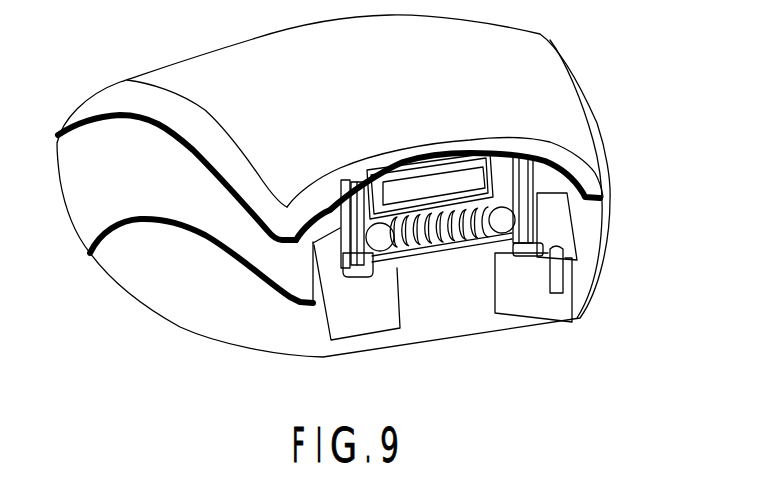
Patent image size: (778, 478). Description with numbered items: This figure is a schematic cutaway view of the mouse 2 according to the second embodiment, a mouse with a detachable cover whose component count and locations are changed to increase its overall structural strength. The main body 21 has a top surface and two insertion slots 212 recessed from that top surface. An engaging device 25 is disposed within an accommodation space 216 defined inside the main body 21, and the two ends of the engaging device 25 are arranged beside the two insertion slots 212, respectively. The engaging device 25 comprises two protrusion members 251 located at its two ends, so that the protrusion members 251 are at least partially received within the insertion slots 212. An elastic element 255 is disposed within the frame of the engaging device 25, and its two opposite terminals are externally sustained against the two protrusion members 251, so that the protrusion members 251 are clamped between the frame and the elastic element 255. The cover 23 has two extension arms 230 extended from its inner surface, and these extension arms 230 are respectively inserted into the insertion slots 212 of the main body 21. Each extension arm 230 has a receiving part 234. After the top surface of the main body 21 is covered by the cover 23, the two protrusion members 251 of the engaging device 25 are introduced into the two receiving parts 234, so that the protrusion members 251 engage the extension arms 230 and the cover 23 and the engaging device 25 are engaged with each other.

The mouse 2 is at (125, 36).
The main body 21 is at (82, 197).
The cover 23 is at (480, 40).
The extension arms 230 is at (365, 197).
The protrusion members 251 is at (350, 205).
The elastic element 255 is at (441, 215).
The engaging device 25 is at (486, 257).
The insertion slots 212 is at (380, 238).
The accommodation space 216 is at (472, 255).
The receiving part 234 is at (286, 210).